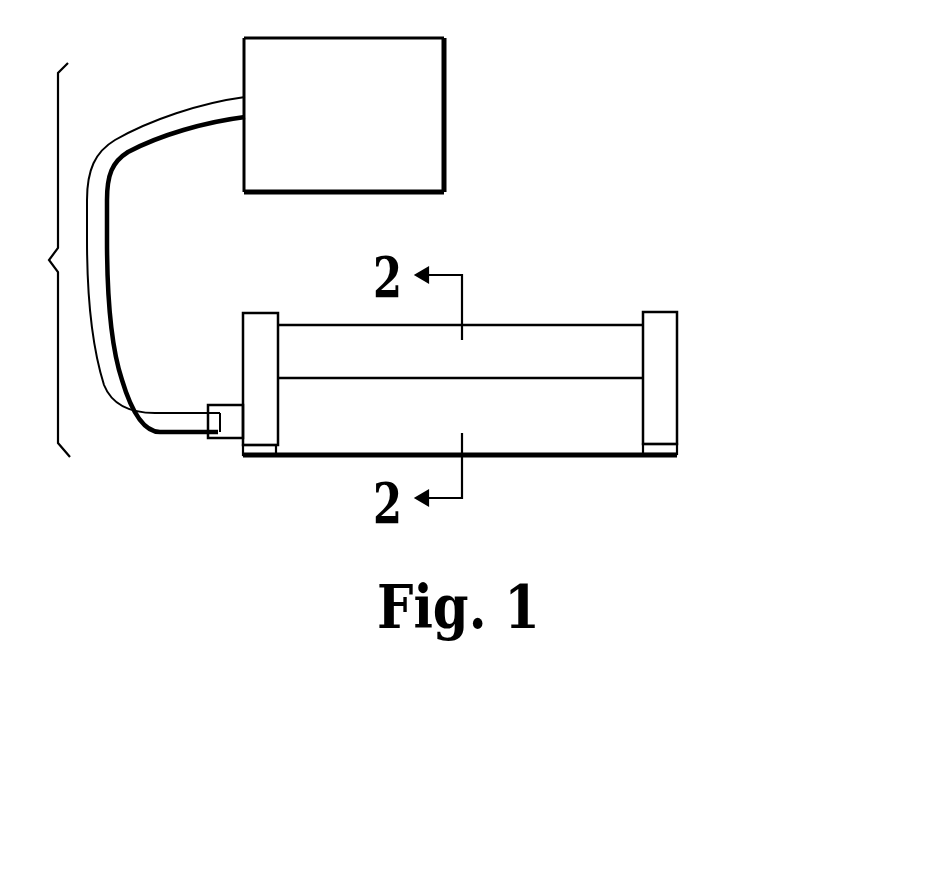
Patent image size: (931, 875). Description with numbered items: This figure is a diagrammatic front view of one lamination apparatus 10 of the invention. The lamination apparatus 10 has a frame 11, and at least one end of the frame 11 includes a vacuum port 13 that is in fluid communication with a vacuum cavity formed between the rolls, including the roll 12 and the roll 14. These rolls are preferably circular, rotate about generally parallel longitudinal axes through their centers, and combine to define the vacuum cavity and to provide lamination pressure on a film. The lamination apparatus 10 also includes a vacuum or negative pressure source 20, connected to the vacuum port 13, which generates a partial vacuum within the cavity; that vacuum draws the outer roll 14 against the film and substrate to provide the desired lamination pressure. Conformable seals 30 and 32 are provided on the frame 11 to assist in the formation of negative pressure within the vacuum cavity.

The lamination apparatus 10 is at (527, 217).
The frame 11 is at (255, 340).
The roll 12 is at (308, 340).
The vacuum port 13 is at (222, 432).
The roll 14 is at (543, 400).
The vacuum or negative pressure source 20 is at (225, 247).
The conformable seal 30 is at (256, 456).
The conformable seal 32 is at (660, 456).